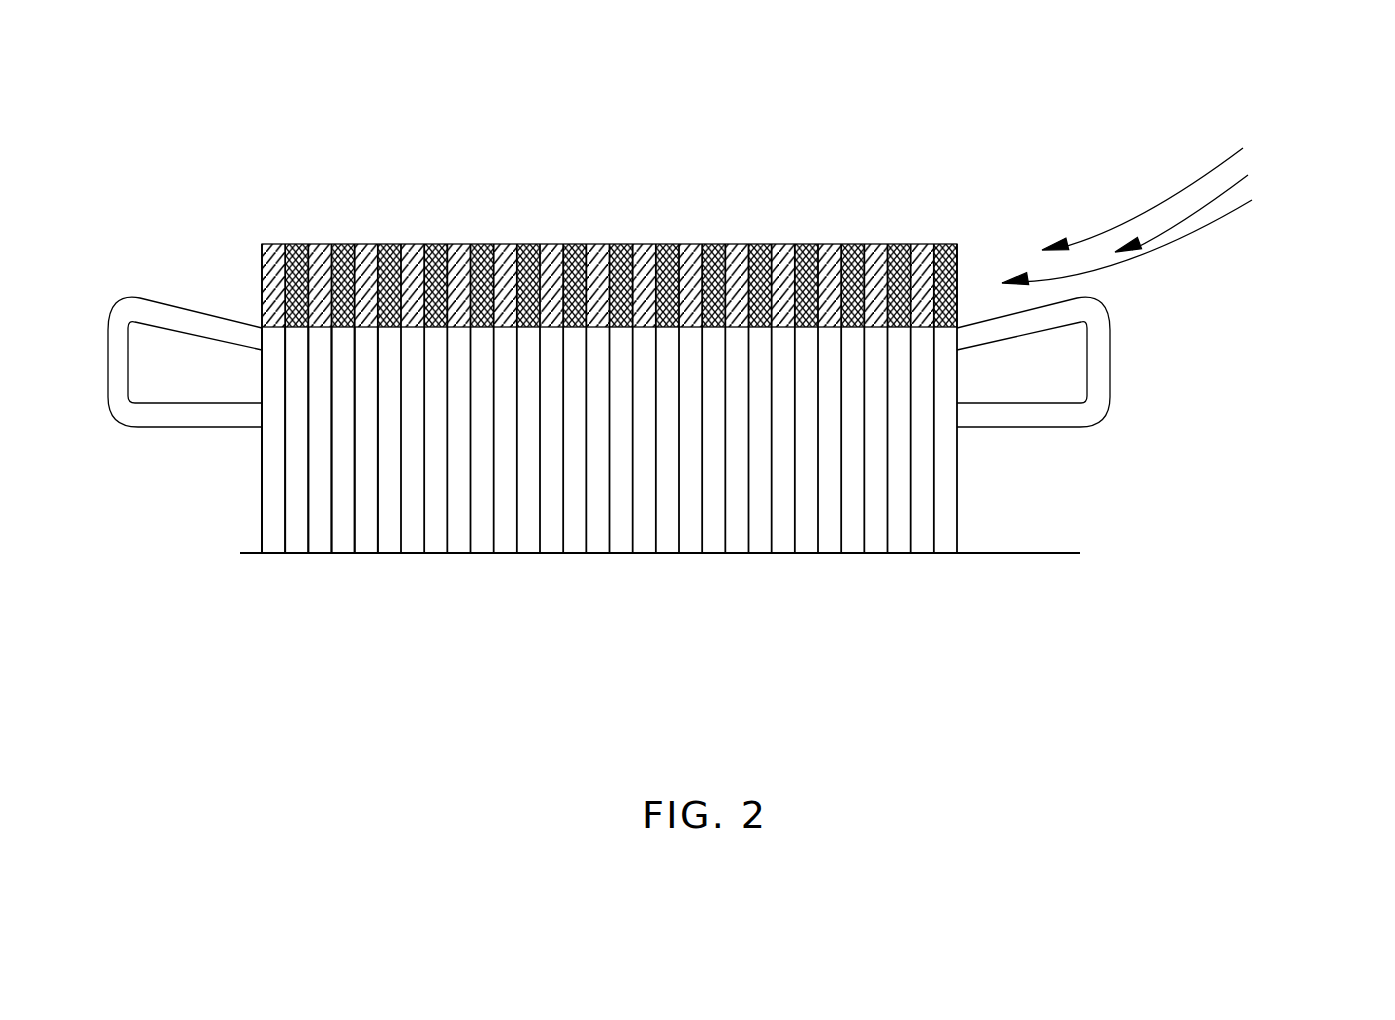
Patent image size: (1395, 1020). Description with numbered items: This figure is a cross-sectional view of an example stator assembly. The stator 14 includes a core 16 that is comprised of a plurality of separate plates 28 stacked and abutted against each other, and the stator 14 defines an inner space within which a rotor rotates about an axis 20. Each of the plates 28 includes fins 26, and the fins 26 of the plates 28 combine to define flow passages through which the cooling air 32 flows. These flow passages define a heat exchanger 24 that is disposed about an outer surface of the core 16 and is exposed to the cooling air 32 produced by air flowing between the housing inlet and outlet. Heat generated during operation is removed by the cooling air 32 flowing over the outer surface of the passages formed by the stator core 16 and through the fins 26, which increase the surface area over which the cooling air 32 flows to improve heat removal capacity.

The stator 14 is at (1180, 365).
The core 16 is at (735, 476).
The axis 20 is at (1017, 557).
The heat exchanger 24 is at (1045, 200).
The fins 26 is at (512, 225).
The plates 28 is at (275, 541).
The cooling air 32 is at (1233, 141).